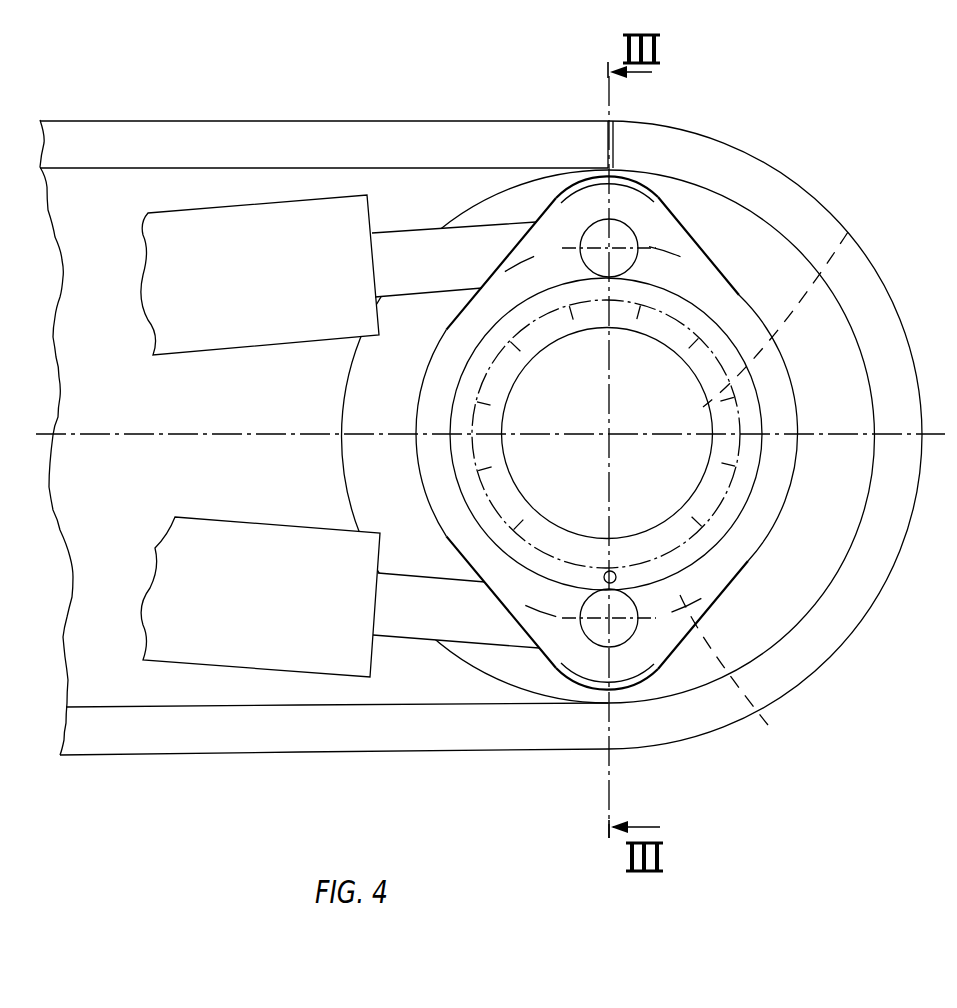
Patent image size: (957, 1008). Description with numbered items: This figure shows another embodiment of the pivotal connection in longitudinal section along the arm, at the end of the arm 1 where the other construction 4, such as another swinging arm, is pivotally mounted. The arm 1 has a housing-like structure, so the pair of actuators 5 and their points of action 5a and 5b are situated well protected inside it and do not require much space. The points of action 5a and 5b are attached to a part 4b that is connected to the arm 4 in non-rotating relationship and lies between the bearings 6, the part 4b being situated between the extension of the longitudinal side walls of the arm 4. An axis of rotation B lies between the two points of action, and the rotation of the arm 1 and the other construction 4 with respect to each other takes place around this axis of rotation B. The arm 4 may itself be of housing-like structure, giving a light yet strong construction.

The arm 1 is at (332, 753).
The other construction 4 is at (848, 232).
The part 4b is at (750, 541).
The actuators 5 is at (249, 203).
The point of action 5a is at (613, 630).
The point of action 5b is at (614, 242).
The bearings 6 is at (762, 718).
The axis of rotation B is at (645, 404).